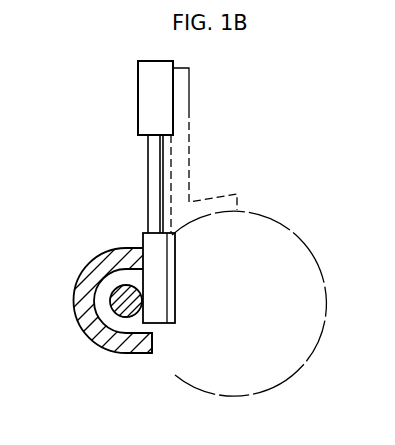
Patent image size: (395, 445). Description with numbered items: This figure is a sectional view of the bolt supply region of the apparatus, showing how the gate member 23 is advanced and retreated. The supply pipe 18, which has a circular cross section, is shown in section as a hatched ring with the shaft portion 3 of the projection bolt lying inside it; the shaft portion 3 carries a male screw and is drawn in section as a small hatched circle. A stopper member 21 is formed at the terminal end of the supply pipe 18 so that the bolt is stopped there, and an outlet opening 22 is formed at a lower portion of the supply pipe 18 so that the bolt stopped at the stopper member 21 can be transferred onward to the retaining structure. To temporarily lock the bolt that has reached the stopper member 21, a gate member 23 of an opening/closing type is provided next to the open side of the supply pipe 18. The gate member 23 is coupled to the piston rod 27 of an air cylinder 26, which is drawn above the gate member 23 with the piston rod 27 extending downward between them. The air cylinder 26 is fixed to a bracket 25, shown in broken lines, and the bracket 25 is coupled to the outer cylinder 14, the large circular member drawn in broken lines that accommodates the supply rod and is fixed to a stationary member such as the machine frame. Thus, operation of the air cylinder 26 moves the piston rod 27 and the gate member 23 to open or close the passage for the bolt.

The outer cylinder 14 is at (297, 228).
The bracket 25 is at (190, 157).
The air cylinder 26 is at (138, 96).
The piston rod 27 is at (148, 185).
The gate member 23 is at (160, 273).
The supply pipe 18 is at (88, 265).
The stopper member 21 is at (108, 322).
The shaft portion 3 is at (110, 297).
The outlet opening 22 is at (148, 333).